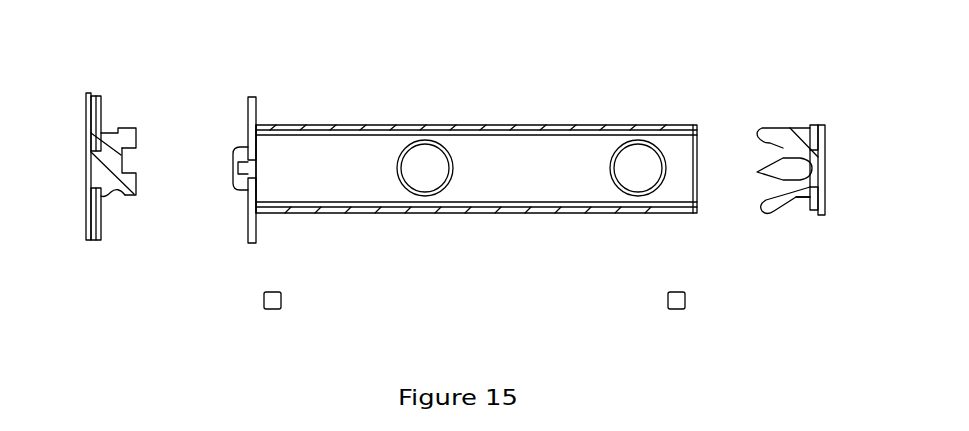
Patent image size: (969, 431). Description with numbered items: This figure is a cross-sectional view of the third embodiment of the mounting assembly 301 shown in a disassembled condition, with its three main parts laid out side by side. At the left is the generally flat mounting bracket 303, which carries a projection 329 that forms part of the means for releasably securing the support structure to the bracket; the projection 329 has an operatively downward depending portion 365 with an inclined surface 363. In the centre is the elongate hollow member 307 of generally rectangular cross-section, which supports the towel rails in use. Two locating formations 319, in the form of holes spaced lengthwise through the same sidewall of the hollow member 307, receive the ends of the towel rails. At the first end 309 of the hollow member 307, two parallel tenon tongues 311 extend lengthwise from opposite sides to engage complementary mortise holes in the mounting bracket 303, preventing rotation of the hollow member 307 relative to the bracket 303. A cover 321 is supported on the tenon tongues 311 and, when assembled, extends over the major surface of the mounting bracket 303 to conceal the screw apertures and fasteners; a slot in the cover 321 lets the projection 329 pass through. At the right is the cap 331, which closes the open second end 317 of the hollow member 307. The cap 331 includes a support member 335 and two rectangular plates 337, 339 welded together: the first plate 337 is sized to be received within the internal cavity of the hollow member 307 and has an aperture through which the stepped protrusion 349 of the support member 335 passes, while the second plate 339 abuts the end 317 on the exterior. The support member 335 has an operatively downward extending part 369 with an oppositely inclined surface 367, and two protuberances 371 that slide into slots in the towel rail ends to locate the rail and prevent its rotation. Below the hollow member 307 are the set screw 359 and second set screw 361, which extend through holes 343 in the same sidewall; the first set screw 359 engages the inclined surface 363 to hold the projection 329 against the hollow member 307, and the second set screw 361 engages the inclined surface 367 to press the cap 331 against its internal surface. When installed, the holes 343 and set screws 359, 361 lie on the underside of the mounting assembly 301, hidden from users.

The mounting assembly 301 is at (178, 58).
The mounting bracket 303 is at (86, 122).
The elongate hollow member 307 is at (352, 125).
The first end 309 is at (263, 120).
The tenon tongues 311 is at (233, 166).
The second end 317 is at (692, 124).
The locating formations 319 is at (429, 171).
The cover 321 is at (253, 97).
The projection 329 is at (118, 143).
The cap 331 is at (824, 106).
The support member 335 is at (780, 138).
The first plate 337 is at (816, 202).
The second plate 339 is at (826, 140).
The holes 343 is at (272, 214).
The stepped protrusion 349 is at (826, 172).
The set screw 359 is at (272, 310).
The second set screw 361 is at (677, 310).
The inclined surface 363 is at (124, 196).
The downward depending portion 365 is at (128, 184).
The inclined surface 367 is at (797, 200).
The downward extending part 369 is at (762, 205).
The protuberances 371 is at (763, 172).